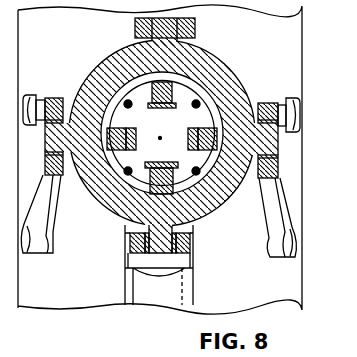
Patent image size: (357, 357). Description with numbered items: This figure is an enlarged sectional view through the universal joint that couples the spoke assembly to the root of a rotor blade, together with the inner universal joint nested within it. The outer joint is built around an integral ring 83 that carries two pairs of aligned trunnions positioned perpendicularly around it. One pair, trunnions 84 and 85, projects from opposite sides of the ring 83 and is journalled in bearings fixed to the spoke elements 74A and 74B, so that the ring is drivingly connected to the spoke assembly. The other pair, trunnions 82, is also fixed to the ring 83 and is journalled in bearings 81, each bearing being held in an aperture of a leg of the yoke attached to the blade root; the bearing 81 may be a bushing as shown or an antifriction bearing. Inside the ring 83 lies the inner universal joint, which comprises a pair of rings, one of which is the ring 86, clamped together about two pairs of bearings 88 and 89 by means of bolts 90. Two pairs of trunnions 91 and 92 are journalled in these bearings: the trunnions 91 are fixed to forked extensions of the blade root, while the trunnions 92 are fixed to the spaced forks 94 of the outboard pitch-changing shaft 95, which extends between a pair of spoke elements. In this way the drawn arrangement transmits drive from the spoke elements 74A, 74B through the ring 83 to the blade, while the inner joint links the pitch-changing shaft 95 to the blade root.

The spoke element 74A is at (57, 208).
The spoke element 74B is at (265, 218).
The bearing 81 is at (178, 264).
The trunnion 82 is at (160, 253).
The ring 83 is at (220, 72).
The trunnion 84 is at (64, 106).
The trunnion 85 is at (279, 141).
The ring 86 is at (182, 118).
The bearing 88 is at (174, 85).
The bearing 89 is at (90, 95).
The bolt 90 is at (199, 106).
The trunnion 91 is at (128, 56).
The trunnion 92 is at (222, 182).
The fork 94 is at (97, 194).
The outboard pitch-changing shaft 95 is at (194, 284).